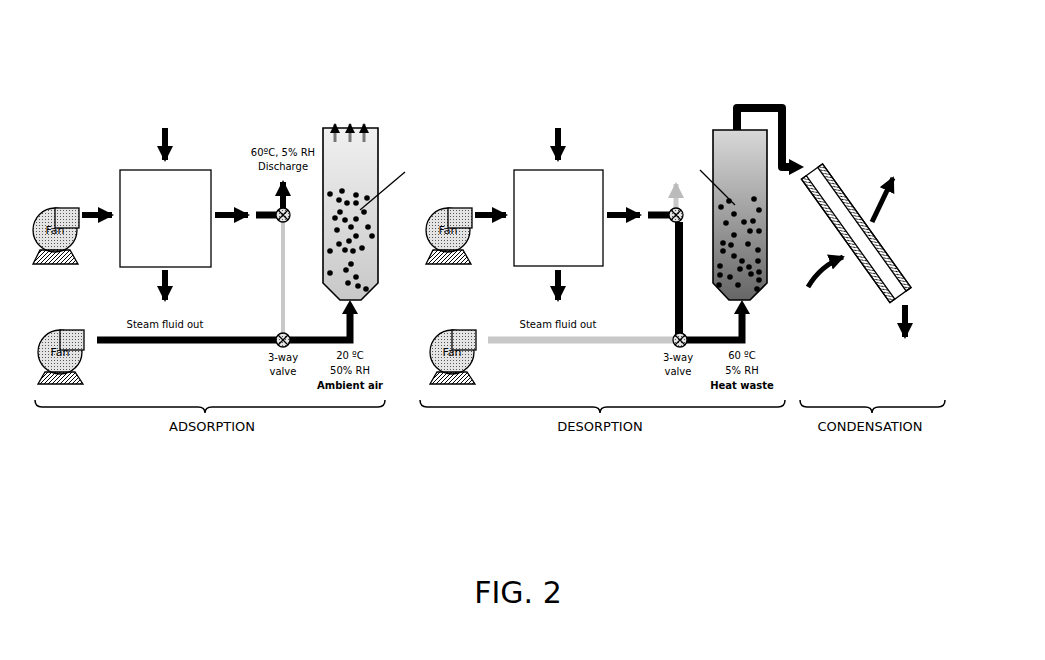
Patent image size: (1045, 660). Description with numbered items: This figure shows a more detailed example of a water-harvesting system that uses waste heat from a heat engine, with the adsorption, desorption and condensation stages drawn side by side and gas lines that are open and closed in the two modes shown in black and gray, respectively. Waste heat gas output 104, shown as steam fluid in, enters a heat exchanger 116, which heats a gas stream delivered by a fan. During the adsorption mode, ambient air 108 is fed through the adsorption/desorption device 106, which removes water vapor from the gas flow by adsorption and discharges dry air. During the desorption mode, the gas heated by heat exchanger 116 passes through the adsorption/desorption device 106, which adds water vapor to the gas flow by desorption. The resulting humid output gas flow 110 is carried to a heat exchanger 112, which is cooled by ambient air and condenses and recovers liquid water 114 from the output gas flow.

The waste heat gas output 104 is at (108, 105).
The adsorption/desorption device 106 is at (372, 133).
The ambient air 108 is at (130, 342).
The output gas flow 110 is at (762, 108).
The heat exchanger 112 is at (880, 245).
The liquid water 114 is at (884, 333).
The heat exchanger 116 is at (147, 256).